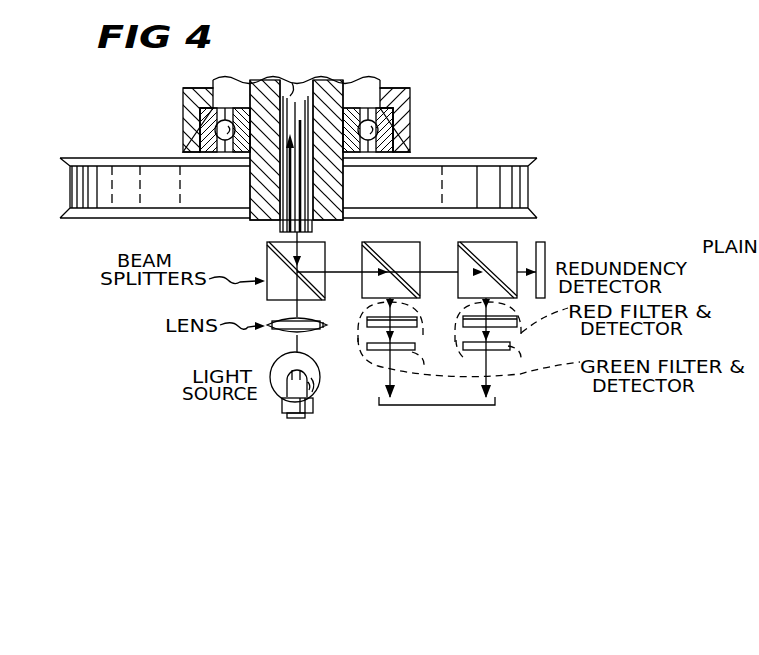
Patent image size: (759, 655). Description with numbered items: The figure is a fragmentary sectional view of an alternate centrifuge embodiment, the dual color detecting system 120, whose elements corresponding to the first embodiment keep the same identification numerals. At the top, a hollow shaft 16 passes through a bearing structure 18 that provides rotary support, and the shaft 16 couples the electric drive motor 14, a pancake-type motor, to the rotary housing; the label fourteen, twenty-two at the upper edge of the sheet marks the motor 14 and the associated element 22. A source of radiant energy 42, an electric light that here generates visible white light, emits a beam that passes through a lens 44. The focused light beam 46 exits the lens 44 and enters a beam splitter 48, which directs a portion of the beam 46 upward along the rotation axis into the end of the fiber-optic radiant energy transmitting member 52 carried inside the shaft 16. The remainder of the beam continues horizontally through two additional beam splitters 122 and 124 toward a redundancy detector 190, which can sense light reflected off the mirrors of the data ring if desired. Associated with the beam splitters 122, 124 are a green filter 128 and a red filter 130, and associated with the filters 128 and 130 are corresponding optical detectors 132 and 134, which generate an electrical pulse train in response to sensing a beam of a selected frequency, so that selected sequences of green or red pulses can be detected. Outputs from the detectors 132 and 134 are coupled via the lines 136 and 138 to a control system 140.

The electric drive motor 14 is at (66, 190).
The upper carriage part 22 is at (654, 6).
The bearing structure 18 is at (176, 117).
The system 120 is at (424, 114).
The hollow shaft 16 is at (264, 214).
The fiber-optic radiant energy transmitting member 52 is at (297, 92).
The focused light beam 46 is at (290, 174).
The beam splitter 48 is at (267, 264).
The beam splitter 122 is at (383, 242).
The beam splitter 124 is at (483, 242).
The redundancy detector 190 is at (540, 242).
The green filter 128 is at (367, 320).
The red filter 130 is at (463, 320).
The optical detector 132 is at (372, 351).
The optical detector 134 is at (511, 348).
The line 136 is at (392, 379).
The line 138 is at (489, 383).
The control system 140 is at (486, 413).
The lens 44 is at (276, 333).
The source of radiant energy 42 is at (283, 402).